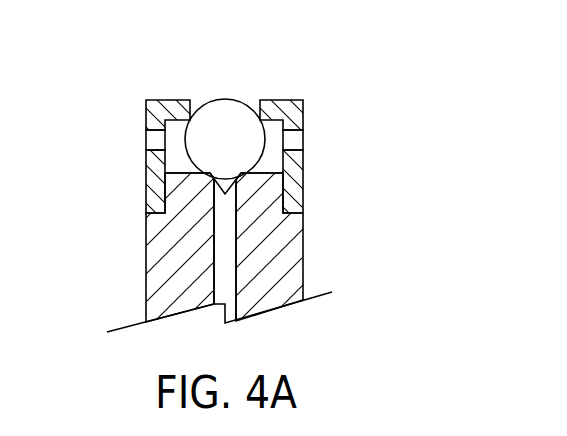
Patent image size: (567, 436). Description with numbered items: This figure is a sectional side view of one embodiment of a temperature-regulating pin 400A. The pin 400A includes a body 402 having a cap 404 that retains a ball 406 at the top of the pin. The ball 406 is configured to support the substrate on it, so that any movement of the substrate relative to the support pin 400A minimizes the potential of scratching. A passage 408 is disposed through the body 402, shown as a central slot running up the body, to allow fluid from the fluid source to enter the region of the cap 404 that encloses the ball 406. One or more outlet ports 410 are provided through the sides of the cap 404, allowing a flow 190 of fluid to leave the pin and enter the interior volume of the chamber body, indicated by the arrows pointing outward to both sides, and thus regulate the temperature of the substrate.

The temperature-regulating pin 400A is at (260, 173).
The body 402 is at (158, 267).
The cap 404 is at (297, 184).
The ball 406 is at (227, 115).
The passage 408 is at (227, 270).
The outlet ports 410 is at (155, 155).
The flow of fluid 190 is at (127, 139).